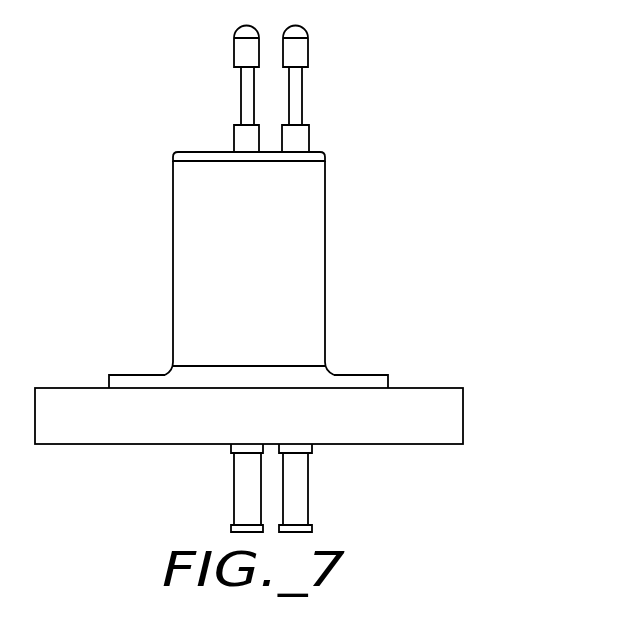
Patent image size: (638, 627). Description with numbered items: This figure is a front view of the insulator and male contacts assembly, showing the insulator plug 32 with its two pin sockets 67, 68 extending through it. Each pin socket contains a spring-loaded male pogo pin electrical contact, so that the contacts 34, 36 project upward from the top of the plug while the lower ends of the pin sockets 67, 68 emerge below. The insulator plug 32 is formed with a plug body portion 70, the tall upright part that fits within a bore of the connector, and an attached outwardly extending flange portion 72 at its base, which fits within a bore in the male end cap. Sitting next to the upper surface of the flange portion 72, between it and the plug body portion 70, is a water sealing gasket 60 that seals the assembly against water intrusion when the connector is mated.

The insulator plug 32 is at (462, 140).
The spring-loaded male pogo pin electrical contact 34 is at (239, 53).
The spring-loaded male pogo pin electrical contact 36 is at (303, 52).
The water sealing gasket 60 is at (348, 373).
The pin socket 67 is at (236, 495).
The pin socket 68 is at (310, 485).
The plug body portion 70 is at (325, 235).
The flange portion 72 is at (464, 418).